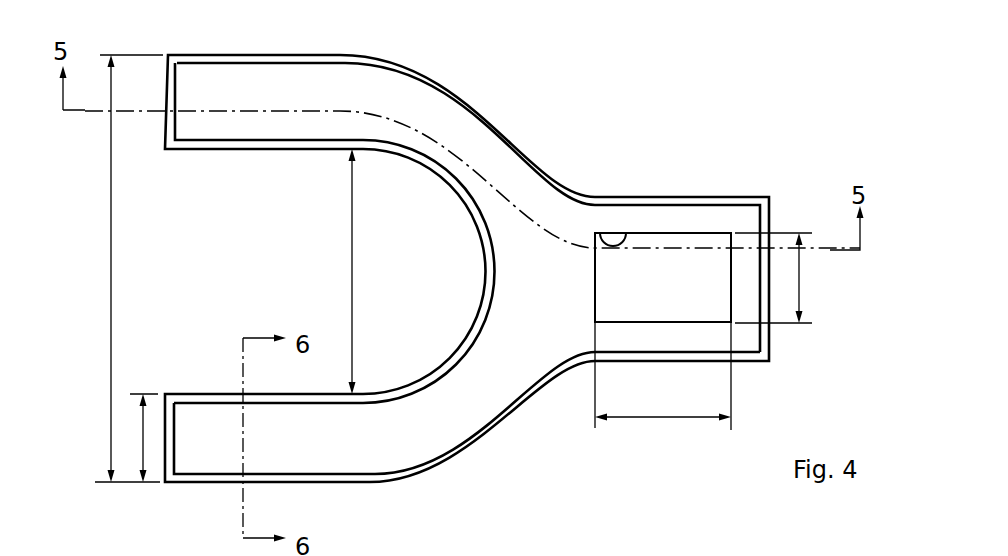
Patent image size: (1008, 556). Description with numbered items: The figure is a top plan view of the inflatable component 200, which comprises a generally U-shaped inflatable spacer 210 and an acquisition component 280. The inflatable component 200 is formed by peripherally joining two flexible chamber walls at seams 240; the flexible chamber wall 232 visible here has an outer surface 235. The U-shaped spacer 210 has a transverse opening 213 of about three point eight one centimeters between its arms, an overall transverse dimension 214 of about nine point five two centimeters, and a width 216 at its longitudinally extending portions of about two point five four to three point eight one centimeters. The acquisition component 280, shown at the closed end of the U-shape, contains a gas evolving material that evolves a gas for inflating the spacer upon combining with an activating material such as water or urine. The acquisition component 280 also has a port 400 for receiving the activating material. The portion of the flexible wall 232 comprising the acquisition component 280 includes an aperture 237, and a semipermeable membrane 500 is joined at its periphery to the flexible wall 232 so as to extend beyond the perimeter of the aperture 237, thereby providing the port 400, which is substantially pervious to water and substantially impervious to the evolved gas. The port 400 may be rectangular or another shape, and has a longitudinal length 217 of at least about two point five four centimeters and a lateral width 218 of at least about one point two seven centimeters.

The inflatable component 200 is at (572, 110).
The inflatable spacer 210 is at (360, 56).
The transverse opening 213 is at (353, 273).
The overall transverse dimension 214 is at (112, 268).
The width 216 is at (143, 435).
The longitudinal length 217 is at (660, 418).
The lateral width 218 is at (800, 280).
The flexible chamber wall 232 is at (688, 217).
The outer surface 235 is at (347, 458).
The aperture 237 is at (626, 232).
The seams 240 is at (170, 123).
The acquisition component 280 is at (640, 362).
The port 400 is at (708, 230).
The semipermeable membrane 500 is at (652, 243).